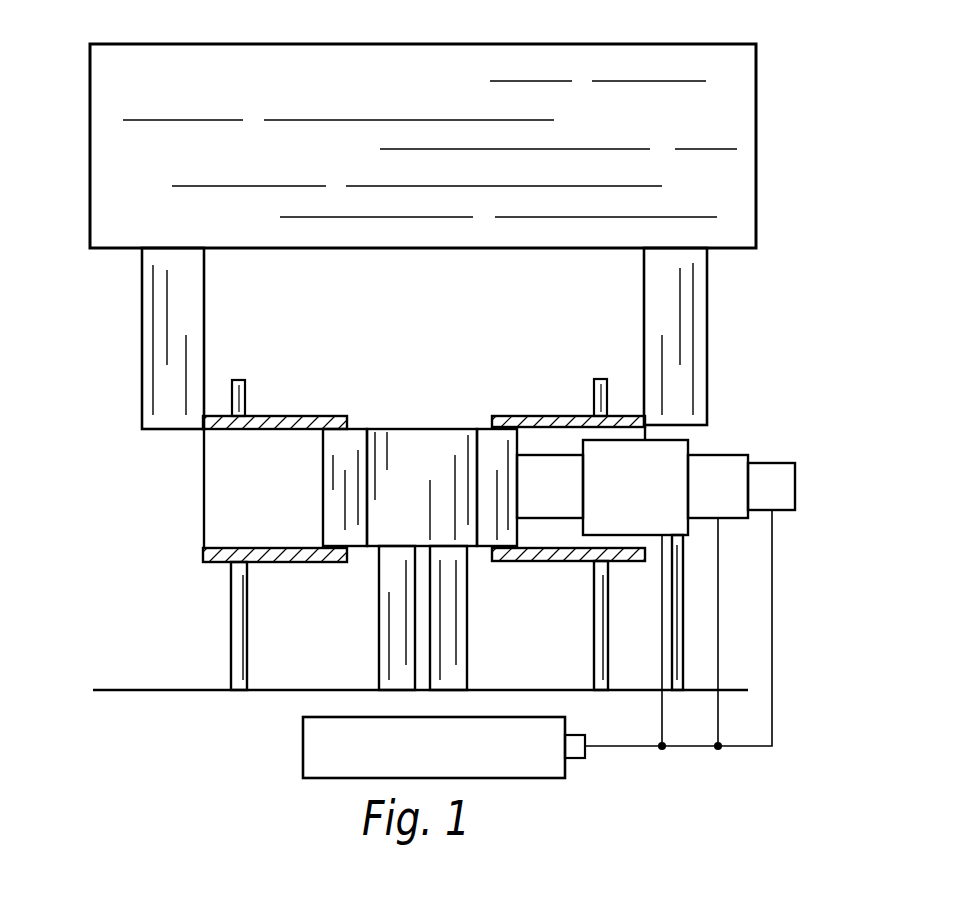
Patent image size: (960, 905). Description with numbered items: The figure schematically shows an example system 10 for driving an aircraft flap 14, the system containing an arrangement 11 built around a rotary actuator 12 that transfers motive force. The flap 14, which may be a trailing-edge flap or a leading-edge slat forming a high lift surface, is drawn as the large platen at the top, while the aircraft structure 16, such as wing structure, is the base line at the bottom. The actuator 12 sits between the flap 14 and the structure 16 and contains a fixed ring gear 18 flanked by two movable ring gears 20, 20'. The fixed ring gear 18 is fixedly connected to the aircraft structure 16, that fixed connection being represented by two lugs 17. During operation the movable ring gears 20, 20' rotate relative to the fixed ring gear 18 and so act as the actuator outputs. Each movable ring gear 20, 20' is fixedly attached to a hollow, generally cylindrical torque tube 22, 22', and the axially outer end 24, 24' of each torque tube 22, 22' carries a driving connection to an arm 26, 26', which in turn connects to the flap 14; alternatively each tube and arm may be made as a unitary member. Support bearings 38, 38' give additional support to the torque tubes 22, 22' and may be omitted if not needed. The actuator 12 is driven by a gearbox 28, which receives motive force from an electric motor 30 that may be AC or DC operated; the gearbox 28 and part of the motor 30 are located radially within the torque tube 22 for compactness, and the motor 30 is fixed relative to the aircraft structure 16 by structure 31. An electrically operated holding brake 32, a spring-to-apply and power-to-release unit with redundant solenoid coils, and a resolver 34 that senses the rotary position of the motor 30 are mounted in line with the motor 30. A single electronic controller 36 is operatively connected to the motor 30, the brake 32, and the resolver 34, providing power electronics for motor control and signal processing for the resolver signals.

The system 10 is at (845, 312).
The arrangement 11 is at (752, 428).
The actuator 12 is at (288, 513).
The flap 14 is at (698, 120).
The aircraft structure 16 is at (153, 690).
The lugs 17 is at (447, 638).
The fixed ring gear 18 is at (420, 452).
The movable ring gear 20 is at (481, 457).
The movable ring gear 20' is at (315, 487).
The torque tube 22 is at (568, 461).
The torque tube 22' is at (275, 463).
The axially outer end 24 is at (708, 390).
The axially outer end 24' is at (158, 485).
The arm 26 is at (717, 336).
The arm 26' is at (134, 338).
The gearbox 28 is at (537, 499).
The electric motor 30 is at (623, 499).
The structure 31 is at (683, 593).
The holding brake 32 is at (706, 499).
The resolver 34 is at (759, 499).
The electronic controller 36 is at (303, 745).
The support bearing 38 is at (579, 357).
The support bearing 38' is at (266, 361).